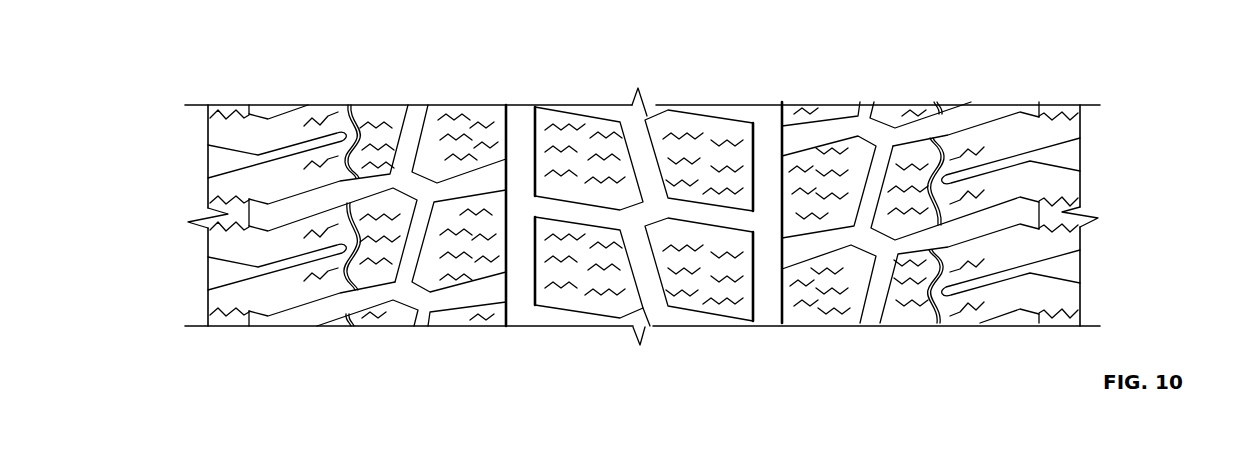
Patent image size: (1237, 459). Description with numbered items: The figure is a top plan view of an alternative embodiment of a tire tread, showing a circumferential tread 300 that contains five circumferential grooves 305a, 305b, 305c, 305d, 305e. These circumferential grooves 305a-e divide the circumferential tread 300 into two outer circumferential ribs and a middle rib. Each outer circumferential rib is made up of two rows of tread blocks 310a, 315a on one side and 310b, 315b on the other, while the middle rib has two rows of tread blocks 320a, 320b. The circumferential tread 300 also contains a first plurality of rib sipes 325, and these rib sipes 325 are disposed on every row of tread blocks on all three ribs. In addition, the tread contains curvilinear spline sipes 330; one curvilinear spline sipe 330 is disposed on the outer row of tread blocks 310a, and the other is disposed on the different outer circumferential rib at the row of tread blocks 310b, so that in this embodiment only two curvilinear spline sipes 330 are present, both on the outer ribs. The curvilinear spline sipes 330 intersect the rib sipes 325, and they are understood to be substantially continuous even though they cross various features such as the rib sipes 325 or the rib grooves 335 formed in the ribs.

The circumferential tread 300 is at (206, 63).
The circumferential groove 305a is at (420, 330).
The circumferential groove 305b is at (522, 330).
The circumferential groove 305c is at (655, 330).
The circumferential groove 305d is at (765, 330).
The circumferential groove 305e is at (865, 330).
The row of tread blocks 310a is at (382, 87).
The row of tread blocks 310b is at (948, 87).
The row of tread blocks 315a is at (468, 87).
The row of tread blocks 315b is at (816, 87).
The row of tread blocks 320a is at (598, 87).
The row of tread blocks 320b is at (660, 87).
The rib sipes 325 is at (347, 104).
The curvilinear spline sipes 330 is at (225, 296).
The rib grooves 335 is at (907, 135).